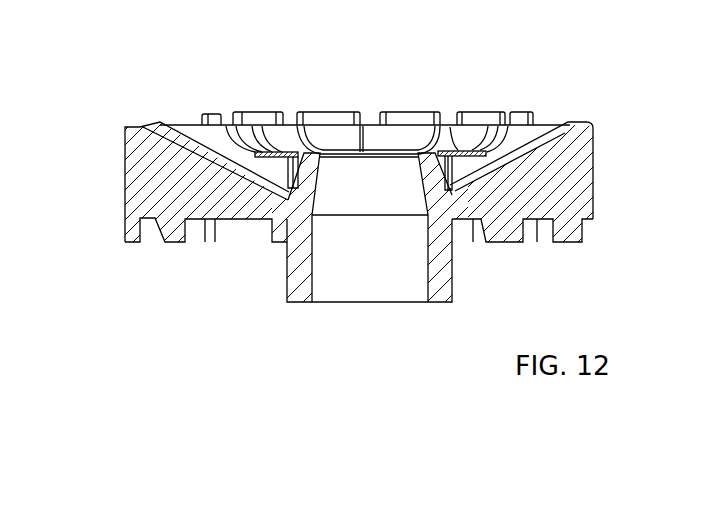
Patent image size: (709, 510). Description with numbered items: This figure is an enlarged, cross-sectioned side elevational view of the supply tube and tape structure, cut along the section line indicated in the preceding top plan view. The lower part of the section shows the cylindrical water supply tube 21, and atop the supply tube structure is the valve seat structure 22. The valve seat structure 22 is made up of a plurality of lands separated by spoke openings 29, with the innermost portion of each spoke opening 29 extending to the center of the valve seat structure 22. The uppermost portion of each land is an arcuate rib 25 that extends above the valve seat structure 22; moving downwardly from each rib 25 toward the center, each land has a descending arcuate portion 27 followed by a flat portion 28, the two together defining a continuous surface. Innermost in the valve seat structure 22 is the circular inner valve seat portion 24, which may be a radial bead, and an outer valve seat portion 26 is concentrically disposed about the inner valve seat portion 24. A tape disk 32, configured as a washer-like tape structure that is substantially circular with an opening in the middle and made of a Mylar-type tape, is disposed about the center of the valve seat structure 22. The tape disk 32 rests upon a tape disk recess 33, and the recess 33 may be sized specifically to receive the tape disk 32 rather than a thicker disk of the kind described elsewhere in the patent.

The cylindrical water supply tube 21 is at (445, 272).
The valve seat structure 22 is at (577, 82).
The inner valve seat portion 24 is at (315, 175).
The arcuate rib 25 is at (323, 108).
The outer valve seat portion 26 is at (578, 169).
The descending arcuate portion 27 is at (335, 140).
The flat portion 28 is at (465, 150).
The spoke openings 29 is at (372, 143).
The tape disk 32 is at (277, 152).
The tape disk recess 33 is at (277, 152).